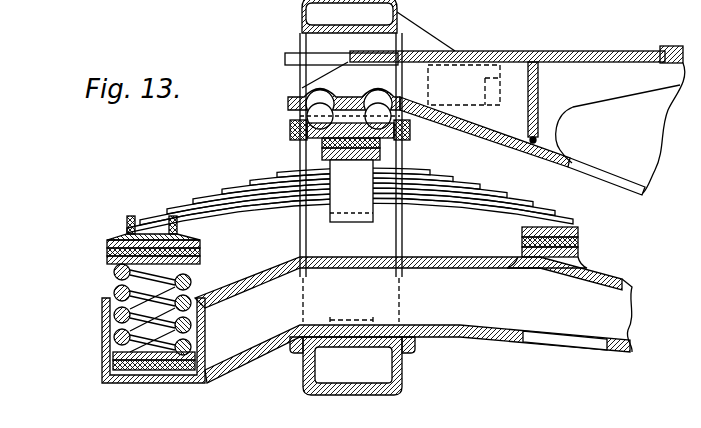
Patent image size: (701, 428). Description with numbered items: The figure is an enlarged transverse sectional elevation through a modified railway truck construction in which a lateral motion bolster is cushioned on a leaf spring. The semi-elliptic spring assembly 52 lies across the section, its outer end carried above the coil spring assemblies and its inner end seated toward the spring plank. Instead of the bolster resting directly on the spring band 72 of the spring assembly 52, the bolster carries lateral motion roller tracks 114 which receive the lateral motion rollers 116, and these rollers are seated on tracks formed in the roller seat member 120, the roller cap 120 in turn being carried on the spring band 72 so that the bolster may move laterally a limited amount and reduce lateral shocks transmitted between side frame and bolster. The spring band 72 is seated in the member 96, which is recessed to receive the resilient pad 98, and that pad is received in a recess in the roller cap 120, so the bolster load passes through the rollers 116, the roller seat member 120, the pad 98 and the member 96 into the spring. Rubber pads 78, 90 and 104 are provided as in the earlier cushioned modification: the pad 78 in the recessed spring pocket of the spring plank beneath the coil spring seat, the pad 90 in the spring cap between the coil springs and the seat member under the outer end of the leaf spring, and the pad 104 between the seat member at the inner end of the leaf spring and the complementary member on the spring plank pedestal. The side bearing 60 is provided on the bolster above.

The semi-elliptic spring assembly 52 is at (247, 193).
The side bearing 60 is at (577, 49).
The spring band 72 is at (350, 216).
The rubber pad 78 is at (104, 370).
The resilient pad 90 is at (107, 253).
The spring band seat member 96 is at (320, 153).
The resilient pad 98 is at (292, 141).
The resilient pad 104 is at (579, 243).
The lateral motion roller track 114 is at (307, 84).
The lateral motion roller 116 is at (378, 106).
The roller seat member 120 is at (292, 125).